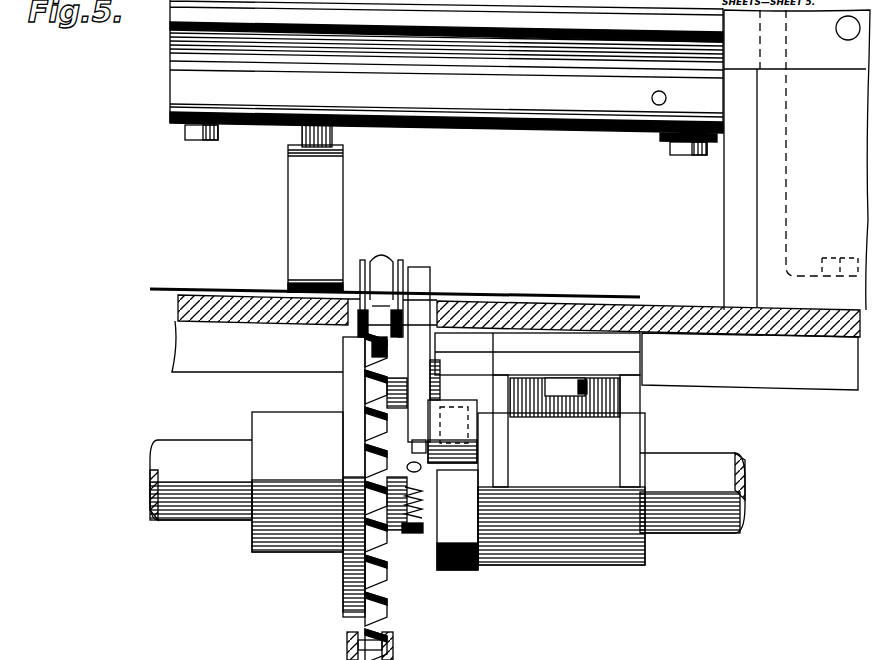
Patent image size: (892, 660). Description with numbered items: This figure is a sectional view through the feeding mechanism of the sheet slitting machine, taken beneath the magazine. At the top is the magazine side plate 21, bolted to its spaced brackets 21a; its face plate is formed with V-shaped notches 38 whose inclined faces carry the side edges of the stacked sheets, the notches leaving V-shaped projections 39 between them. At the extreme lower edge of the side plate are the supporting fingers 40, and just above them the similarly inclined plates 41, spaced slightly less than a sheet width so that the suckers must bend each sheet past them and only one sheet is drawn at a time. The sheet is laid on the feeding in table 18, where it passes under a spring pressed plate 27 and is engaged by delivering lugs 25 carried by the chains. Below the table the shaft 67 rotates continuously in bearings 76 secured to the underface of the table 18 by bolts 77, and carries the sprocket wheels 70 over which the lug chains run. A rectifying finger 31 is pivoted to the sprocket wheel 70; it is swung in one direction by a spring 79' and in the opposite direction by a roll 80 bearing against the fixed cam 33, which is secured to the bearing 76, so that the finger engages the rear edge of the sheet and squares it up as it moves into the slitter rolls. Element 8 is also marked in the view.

The plate 8 is at (510, 297).
The feeding in table 18 is at (696, 304).
The side plate 21 is at (750, 57).
The spaced brackets 21a is at (770, 194).
The delivering lugs 25 is at (384, 256).
The spring pressed plate 27 is at (300, 210).
The rectifying finger 31 is at (425, 343).
The cam 33 is at (465, 572).
The V-shaped notches 38 is at (532, 18).
The V-shaped projections 39 is at (445, 30).
The supporting fingers 40 is at (635, 128).
The inclined plates 41 is at (575, 95).
The shaft 67 is at (690, 470).
The sprocket wheels 70 is at (360, 410).
The bearings 76 is at (562, 472).
The bolts 77 is at (590, 390).
The spring 79' is at (420, 547).
The roll 80 is at (480, 430).